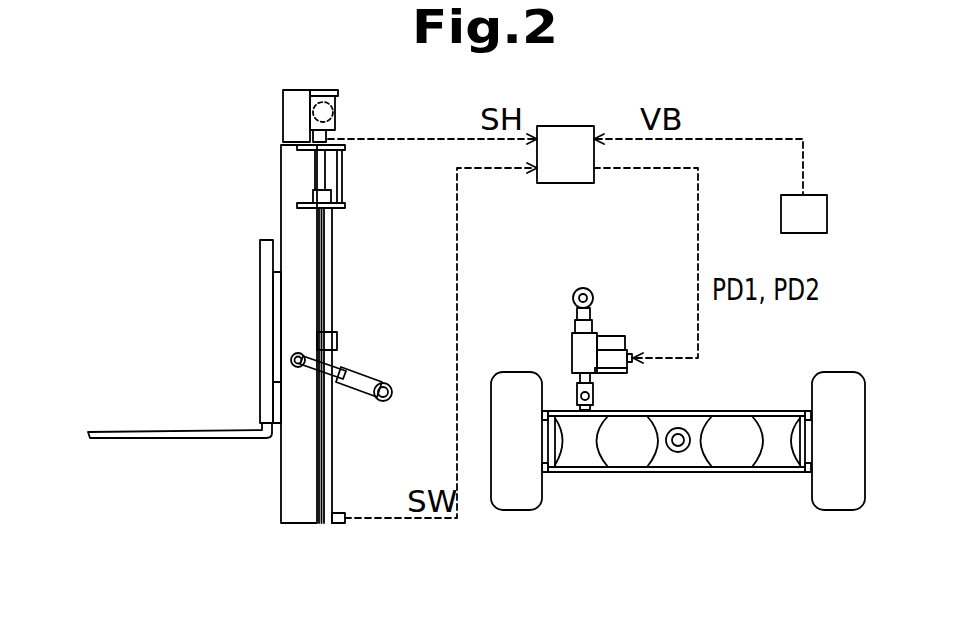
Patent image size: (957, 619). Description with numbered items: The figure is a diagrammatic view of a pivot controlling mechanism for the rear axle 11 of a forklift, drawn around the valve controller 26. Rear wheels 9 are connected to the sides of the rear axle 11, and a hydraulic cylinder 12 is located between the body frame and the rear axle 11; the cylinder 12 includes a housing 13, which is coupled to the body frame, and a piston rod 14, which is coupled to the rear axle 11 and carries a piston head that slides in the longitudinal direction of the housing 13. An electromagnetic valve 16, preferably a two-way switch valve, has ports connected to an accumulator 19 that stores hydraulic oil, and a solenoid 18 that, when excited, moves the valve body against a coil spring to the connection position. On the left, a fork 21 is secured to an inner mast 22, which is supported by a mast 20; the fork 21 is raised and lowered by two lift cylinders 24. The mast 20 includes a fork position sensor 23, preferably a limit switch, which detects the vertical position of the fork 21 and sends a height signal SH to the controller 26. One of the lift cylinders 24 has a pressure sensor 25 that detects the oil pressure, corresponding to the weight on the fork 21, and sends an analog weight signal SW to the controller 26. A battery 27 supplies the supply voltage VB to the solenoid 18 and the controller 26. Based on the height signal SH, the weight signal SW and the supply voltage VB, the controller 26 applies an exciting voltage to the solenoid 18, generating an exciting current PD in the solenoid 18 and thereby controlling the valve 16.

The rear wheels 9 is at (525, 510).
The rear axle 11 is at (757, 473).
The hydraulic cylinder 12 is at (573, 350).
The housing 13 is at (598, 333).
The piston rod 14 is at (592, 388).
The electromagnetic valve 16 is at (612, 370).
The solenoid 18 is at (633, 350).
The accumulator 19 is at (613, 340).
The mast 20 is at (281, 485).
The fork 21 is at (168, 428).
The inner mast 22 is at (283, 128).
The fork position sensor 23 is at (313, 137).
The lift cylinders 24 is at (332, 275).
The pressure sensor 25 is at (337, 512).
The valve controller 26 is at (572, 126).
The battery 27 is at (815, 195).